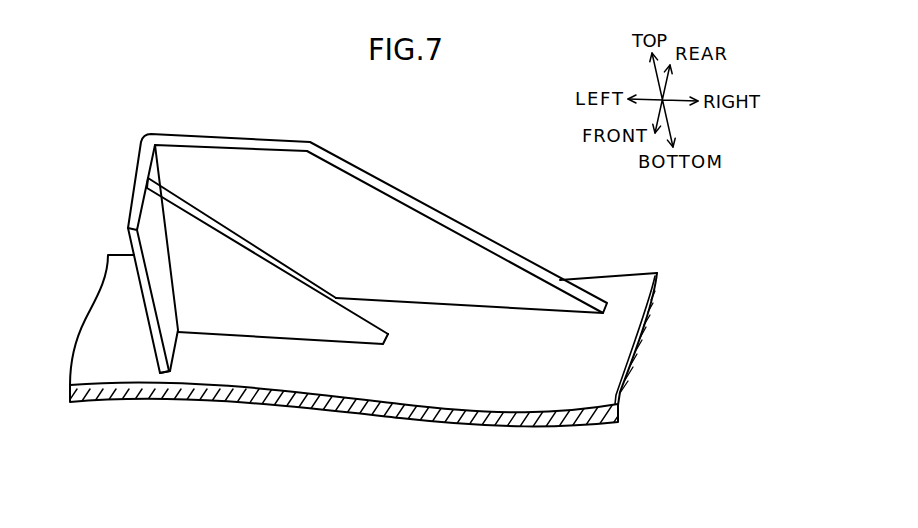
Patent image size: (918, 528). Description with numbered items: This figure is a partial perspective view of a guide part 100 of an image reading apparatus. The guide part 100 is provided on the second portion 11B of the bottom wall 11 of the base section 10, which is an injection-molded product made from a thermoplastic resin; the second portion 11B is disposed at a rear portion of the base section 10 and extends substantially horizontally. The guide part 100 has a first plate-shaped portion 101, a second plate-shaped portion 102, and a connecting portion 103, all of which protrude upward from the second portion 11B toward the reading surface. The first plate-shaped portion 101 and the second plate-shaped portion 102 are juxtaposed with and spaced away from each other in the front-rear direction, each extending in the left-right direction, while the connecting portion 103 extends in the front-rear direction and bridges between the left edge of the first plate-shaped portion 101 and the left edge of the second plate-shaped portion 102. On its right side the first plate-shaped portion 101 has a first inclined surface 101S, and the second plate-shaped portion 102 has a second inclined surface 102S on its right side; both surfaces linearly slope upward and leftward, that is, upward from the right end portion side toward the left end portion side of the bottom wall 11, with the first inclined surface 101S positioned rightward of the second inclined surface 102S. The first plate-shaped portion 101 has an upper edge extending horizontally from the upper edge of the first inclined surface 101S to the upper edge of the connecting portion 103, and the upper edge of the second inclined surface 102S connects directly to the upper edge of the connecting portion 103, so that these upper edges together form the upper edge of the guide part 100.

The guide part 100 is at (367, 288).
The first plate-shaped portion 101 is at (270, 188).
The first inclined surface 101S is at (472, 236).
The second plate-shaped portion 102 is at (208, 265).
The second inclined surface 102S is at (275, 267).
The connecting portion 103 is at (156, 290).
The base section 10 is at (338, 410).
The bottom wall 11 is at (367, 372).
The second portion 11B is at (500, 370).